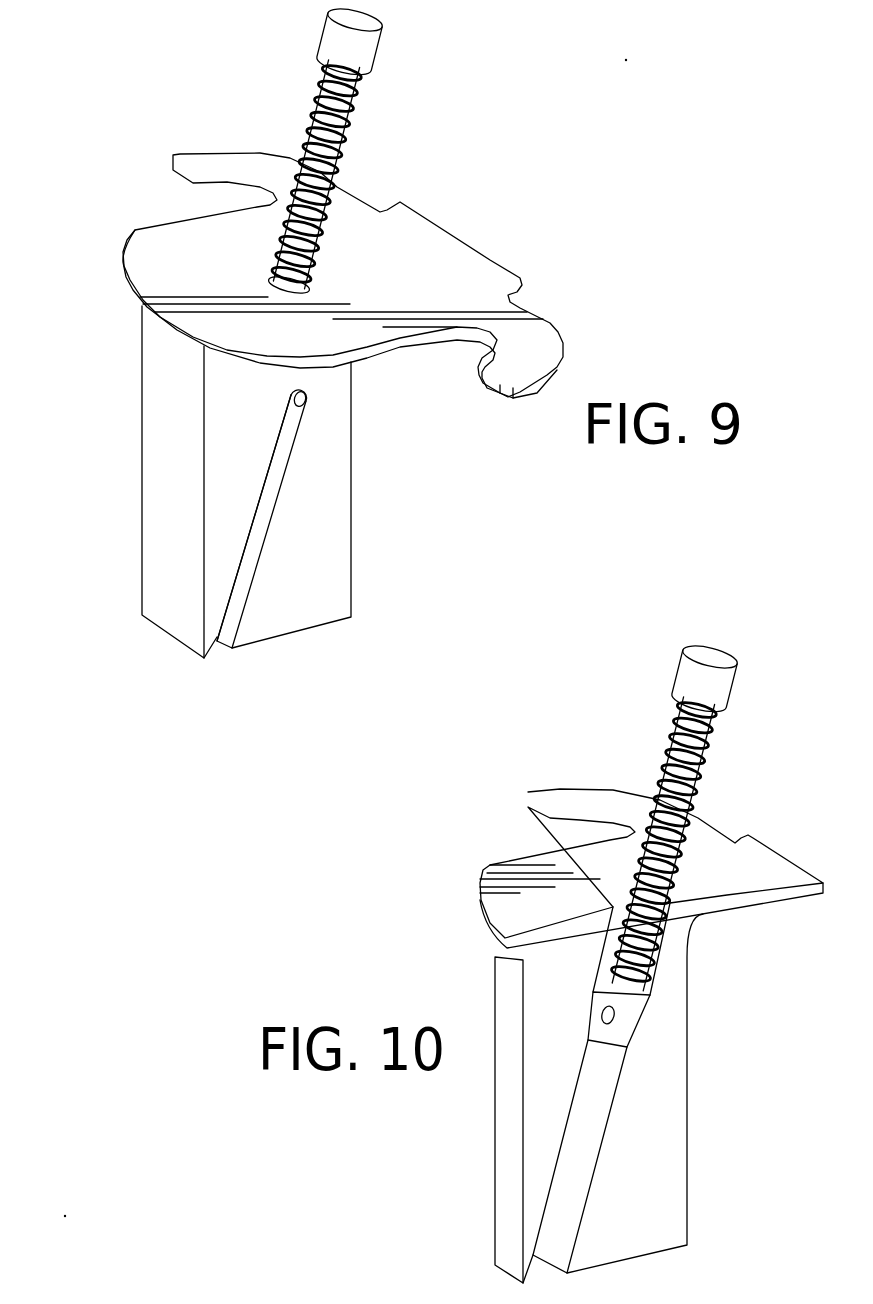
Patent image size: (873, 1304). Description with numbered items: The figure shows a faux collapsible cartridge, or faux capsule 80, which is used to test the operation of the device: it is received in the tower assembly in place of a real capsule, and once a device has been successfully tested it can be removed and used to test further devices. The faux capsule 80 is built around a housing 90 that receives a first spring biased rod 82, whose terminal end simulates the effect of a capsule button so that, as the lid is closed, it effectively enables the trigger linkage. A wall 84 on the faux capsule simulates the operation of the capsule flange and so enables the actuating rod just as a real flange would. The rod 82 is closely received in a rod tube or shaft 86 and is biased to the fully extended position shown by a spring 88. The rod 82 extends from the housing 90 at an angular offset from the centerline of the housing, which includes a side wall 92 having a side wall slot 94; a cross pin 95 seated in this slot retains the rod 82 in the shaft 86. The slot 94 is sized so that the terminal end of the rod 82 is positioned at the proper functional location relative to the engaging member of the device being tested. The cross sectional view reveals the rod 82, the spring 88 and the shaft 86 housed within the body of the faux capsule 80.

In FIG. 9, the faux capsule 80 is at (549, 269).
In FIG. 9, the spring biased rod 82 is at (368, 53).
In FIG. 10, the spring biased rod 82 is at (733, 650).
In FIG. 9, the wall 84 is at (408, 232).
In FIG. 10, the wall 84 is at (651, 892).
In FIG. 10, the rod tube or shaft 86 is at (595, 1092).
In FIG. 10, the spring 88 is at (703, 770).
In FIG. 9, the housing 90 is at (145, 432).
In FIG. 9, the side wall 92 is at (333, 522).
In FIG. 9, the side wall slot 94 is at (237, 608).
In FIG. 9, the pin 95 is at (313, 407).